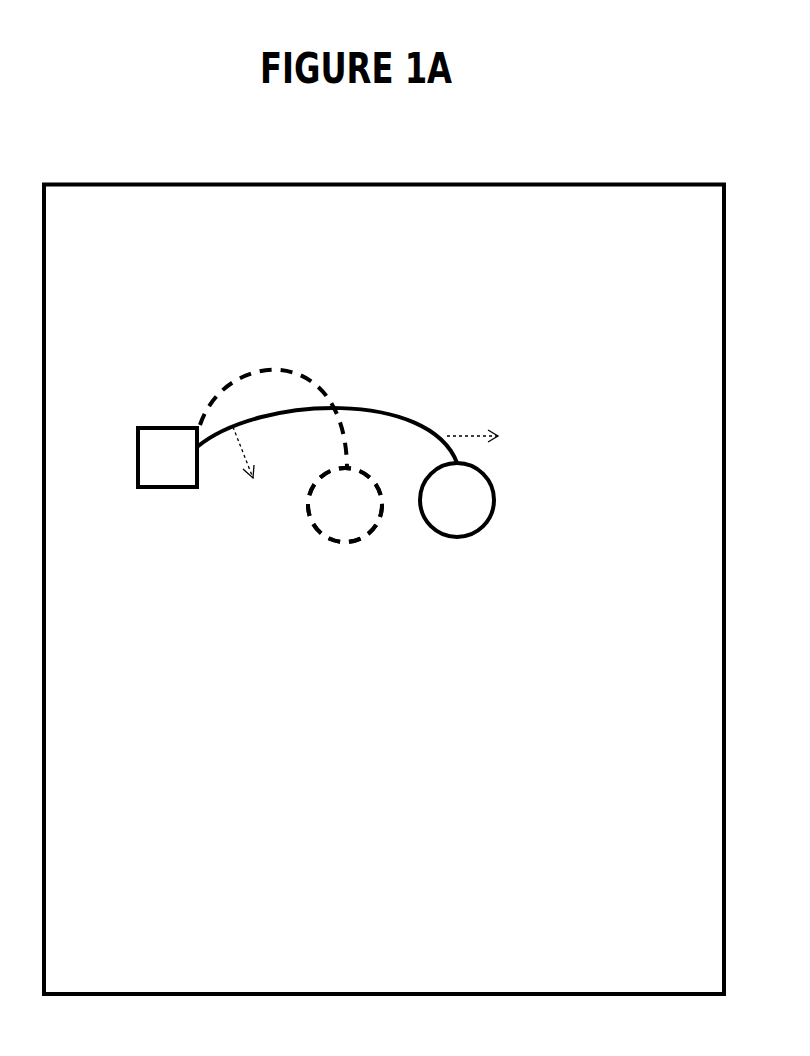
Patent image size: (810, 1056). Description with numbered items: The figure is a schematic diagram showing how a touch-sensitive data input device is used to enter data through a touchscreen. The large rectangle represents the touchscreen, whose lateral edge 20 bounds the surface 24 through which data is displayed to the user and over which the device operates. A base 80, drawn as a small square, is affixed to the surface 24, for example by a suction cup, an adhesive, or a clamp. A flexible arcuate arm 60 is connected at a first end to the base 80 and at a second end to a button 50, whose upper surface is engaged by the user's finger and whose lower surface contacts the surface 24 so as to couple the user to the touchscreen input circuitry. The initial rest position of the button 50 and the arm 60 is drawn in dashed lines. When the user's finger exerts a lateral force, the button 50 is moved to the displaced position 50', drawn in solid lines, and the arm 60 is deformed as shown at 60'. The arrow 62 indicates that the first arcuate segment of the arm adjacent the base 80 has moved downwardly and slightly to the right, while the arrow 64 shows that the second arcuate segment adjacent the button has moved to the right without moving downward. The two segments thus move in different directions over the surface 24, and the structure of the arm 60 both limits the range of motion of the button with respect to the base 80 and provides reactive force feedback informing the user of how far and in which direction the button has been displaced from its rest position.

The lateral edge of a touchscreen 20 is at (46, 783).
The surface 24 is at (437, 804).
The base 80 is at (155, 428).
The arm 60 is at (291, 401).
The deformed arm 60' is at (327, 380).
The button 50 is at (443, 400).
The displaced position of the button 50' is at (474, 562).
The arrow 62 is at (257, 477).
The arrow 64 is at (495, 436).